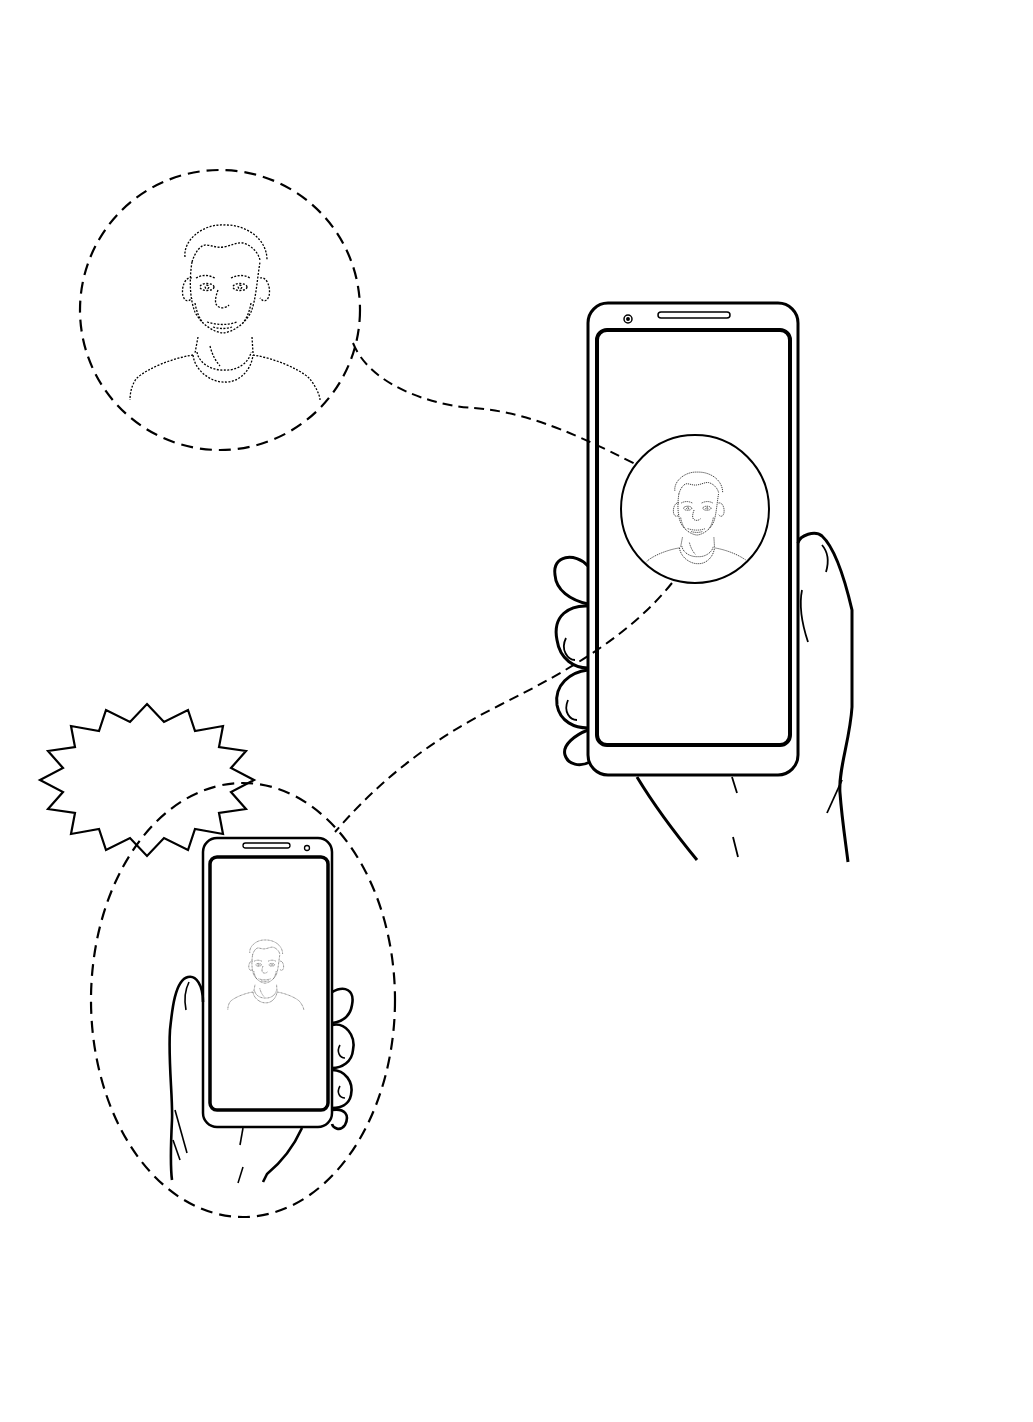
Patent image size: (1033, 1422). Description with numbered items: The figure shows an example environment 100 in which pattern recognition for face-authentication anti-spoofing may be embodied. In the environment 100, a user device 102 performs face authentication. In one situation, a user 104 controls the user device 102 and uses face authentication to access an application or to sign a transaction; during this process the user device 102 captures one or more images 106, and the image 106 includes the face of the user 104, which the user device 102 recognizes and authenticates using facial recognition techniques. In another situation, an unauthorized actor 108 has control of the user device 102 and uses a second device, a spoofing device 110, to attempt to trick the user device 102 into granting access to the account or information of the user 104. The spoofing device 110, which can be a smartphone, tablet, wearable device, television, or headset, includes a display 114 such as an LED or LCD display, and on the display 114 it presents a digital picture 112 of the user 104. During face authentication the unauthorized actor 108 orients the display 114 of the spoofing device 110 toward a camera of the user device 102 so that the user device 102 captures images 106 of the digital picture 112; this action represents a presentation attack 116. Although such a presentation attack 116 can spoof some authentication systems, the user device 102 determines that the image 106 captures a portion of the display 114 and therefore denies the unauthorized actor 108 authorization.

The environment 100 is at (158, 52).
The user device 102 is at (588, 480).
The user 104 is at (288, 290).
The image 106 is at (735, 462).
The unauthorized actor 108 is at (353, 1212).
The spoofing device 110 is at (288, 982).
The digital picture 112 is at (332, 927).
The display 114 is at (212, 932).
The presentation attack 116 is at (128, 819).